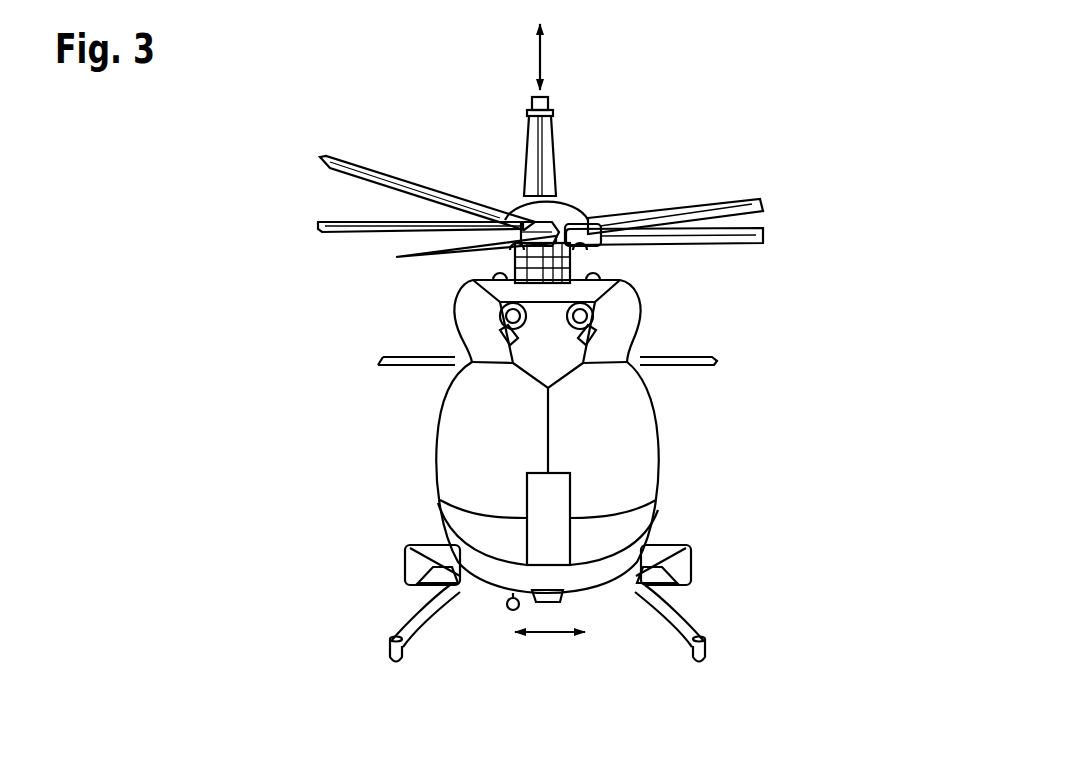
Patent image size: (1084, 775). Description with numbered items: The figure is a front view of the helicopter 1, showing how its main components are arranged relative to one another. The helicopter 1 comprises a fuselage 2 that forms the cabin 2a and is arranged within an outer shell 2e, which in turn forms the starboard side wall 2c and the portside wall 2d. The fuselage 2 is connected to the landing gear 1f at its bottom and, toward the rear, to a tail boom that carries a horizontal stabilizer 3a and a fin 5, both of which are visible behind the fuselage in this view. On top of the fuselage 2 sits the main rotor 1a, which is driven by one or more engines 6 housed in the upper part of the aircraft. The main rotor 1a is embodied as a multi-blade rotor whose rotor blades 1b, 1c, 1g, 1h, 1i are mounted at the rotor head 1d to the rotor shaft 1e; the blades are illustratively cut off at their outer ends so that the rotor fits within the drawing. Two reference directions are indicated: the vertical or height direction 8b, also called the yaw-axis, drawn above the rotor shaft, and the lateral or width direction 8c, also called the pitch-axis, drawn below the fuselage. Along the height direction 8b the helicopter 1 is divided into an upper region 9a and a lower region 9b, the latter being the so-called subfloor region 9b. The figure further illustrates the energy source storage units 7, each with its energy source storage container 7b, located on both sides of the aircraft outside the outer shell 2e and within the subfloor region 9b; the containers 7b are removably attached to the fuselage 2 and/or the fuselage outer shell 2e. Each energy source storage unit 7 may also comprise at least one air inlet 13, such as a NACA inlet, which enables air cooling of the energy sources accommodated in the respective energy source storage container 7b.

The helicopter 1 is at (334, 106).
The main rotor 1a is at (773, 163).
The rotor blade 1b is at (428, 256).
The rotor blade 1c is at (762, 204).
The rotor head 1d is at (585, 188).
The rotor shaft 1e is at (500, 252).
The landing gear 1f is at (706, 653).
The rotor blade 1g is at (757, 238).
The rotor blade 1h is at (340, 233).
The rotor blade 1i is at (323, 167).
The fuselage 2 is at (577, 577).
The cabin 2a is at (497, 445).
The starboard side wall 2c is at (436, 505).
The portside wall 2d is at (670, 482).
The outer shell 2e is at (660, 525).
The horizontal stabilizer 3a is at (718, 359).
The fin 5 is at (518, 110).
The engines 6 is at (573, 348).
The energy source storage unit 7 is at (398, 573).
The energy source storage container 7b is at (423, 546).
The height direction 8b is at (543, 58).
The width direction 8c is at (548, 636).
The upper region 9a is at (743, 470).
The subfloor region 9b is at (744, 594).
The air inlet 13 is at (455, 588).